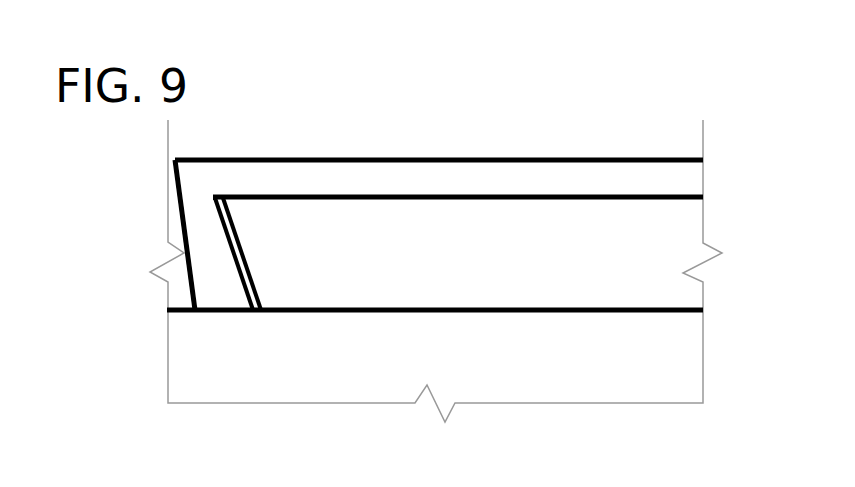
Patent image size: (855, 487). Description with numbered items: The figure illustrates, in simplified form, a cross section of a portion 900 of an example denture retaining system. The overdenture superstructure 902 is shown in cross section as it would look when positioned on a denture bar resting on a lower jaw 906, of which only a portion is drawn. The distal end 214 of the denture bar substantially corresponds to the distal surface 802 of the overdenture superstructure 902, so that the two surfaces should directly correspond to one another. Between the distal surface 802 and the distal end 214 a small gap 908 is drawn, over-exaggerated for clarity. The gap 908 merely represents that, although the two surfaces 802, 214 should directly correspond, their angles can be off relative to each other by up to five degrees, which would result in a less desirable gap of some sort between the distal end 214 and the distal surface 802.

The portion of denture retaining system 900 is at (457, 125).
The overdenture superstructure 902 is at (364, 180).
The gap 908 is at (228, 210).
The distal end 214 is at (252, 272).
The distal surface 802 is at (232, 258).
The lower jaw 906 is at (435, 335).